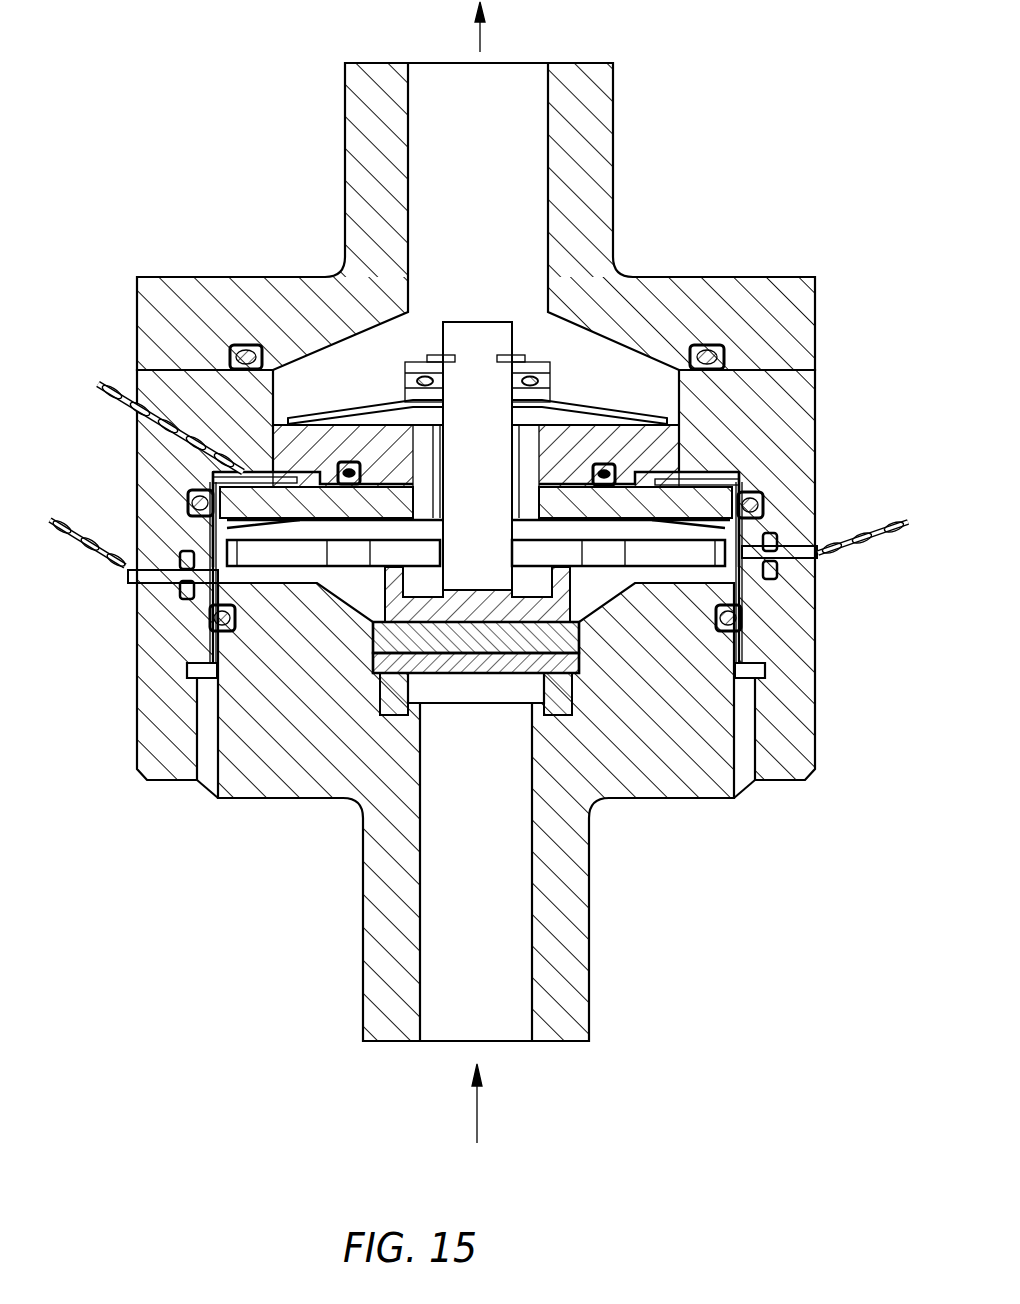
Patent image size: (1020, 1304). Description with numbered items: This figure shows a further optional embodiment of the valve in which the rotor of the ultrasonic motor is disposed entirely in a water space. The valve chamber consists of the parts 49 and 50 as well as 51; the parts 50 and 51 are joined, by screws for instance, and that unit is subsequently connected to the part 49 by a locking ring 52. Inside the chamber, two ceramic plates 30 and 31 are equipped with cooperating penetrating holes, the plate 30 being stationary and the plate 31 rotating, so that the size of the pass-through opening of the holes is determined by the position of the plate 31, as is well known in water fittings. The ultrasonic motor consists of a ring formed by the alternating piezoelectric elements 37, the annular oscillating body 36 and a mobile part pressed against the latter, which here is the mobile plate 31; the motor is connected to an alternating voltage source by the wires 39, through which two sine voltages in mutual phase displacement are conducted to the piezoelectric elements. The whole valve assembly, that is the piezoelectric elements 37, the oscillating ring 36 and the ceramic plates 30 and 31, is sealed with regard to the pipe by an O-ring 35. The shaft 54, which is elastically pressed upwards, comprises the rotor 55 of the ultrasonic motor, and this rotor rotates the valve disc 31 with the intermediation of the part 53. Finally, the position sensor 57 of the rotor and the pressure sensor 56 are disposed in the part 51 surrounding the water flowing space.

The ceramic plate 30 is at (385, 685).
The ceramic plate 31 is at (372, 652).
The O-ring 35 is at (705, 350).
The annular oscillating body 36 is at (228, 540).
The piezoelectric elements 37 is at (227, 478).
The wires 39 is at (100, 382).
The valve chamber part 49 is at (568, 921).
The valve chamber part 50 is at (612, 232).
The valve chamber part 51 is at (786, 406).
The locking ring 52 is at (748, 675).
The intermediate part 53 is at (590, 625).
The shaft 54 is at (498, 345).
The rotor 55 is at (215, 598).
The pressure sensor 56 is at (126, 574).
The position sensor 57 is at (818, 556).